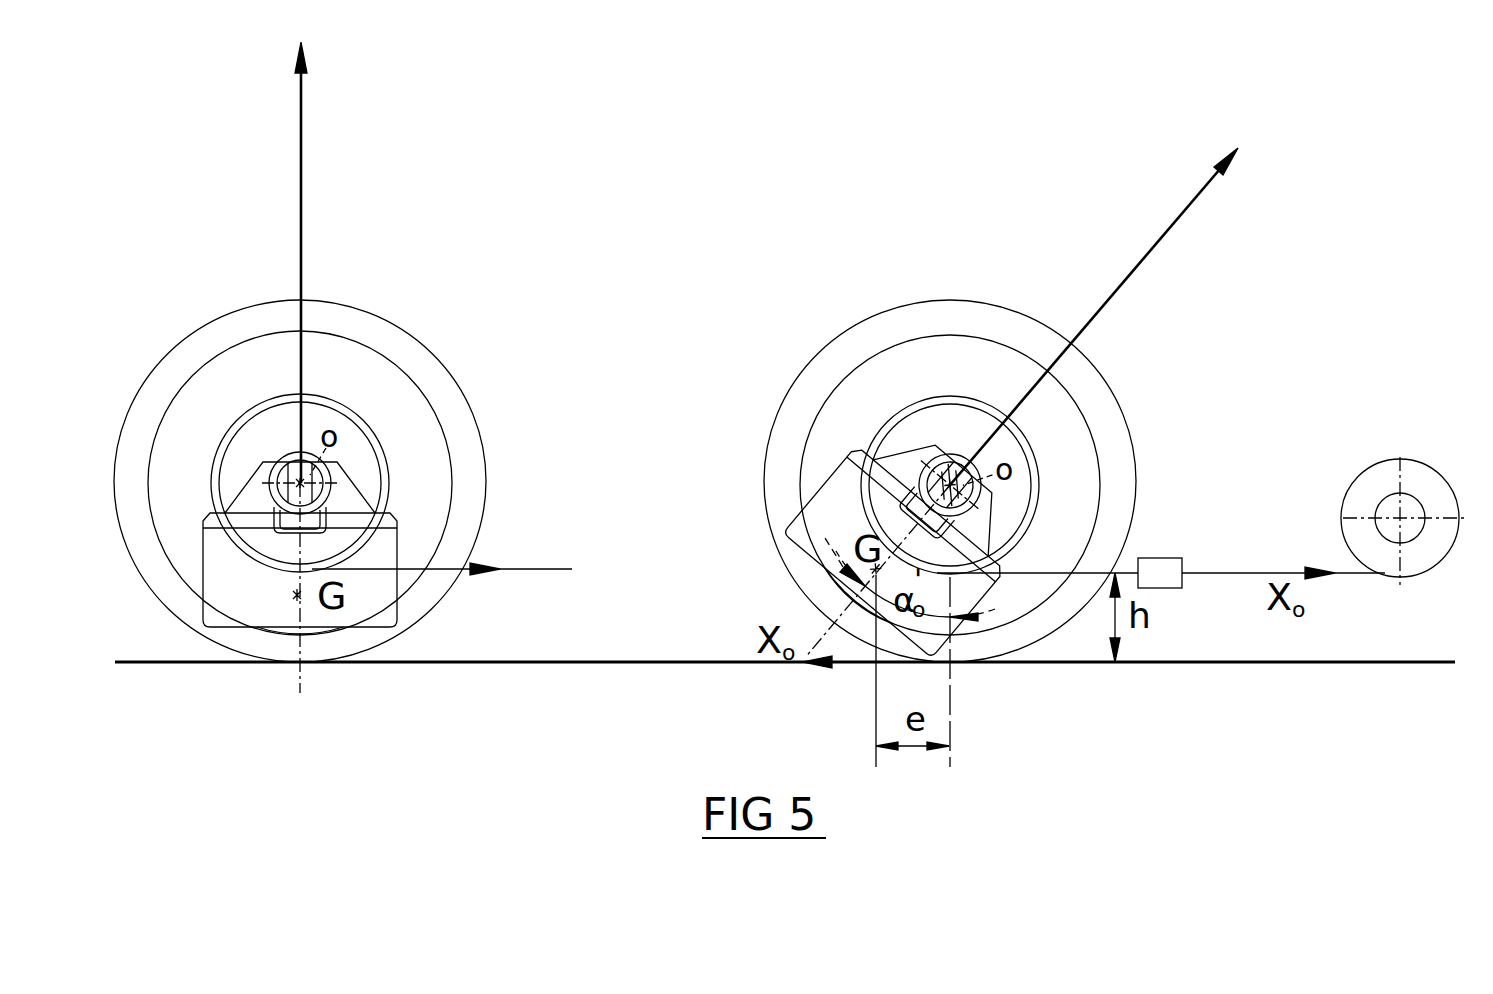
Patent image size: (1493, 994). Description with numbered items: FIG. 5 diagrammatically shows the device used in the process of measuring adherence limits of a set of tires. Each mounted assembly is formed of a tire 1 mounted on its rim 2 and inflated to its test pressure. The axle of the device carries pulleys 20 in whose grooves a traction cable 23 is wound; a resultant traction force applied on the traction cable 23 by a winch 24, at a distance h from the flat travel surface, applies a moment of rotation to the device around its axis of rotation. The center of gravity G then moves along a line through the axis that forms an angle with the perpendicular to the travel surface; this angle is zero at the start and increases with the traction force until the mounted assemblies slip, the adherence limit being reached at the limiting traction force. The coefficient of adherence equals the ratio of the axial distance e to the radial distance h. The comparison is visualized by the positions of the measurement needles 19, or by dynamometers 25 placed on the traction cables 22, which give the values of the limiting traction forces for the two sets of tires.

The tire 1 is at (206, 320).
The rim 2 is at (180, 388).
The measurement needle 19 is at (1248, 213).
The pulley 20 is at (946, 400).
The traction cable 22 is at (548, 550).
The traction cable 23 is at (1350, 580).
The winch 24 is at (1400, 460).
The dynamometer 25 is at (1160, 550).